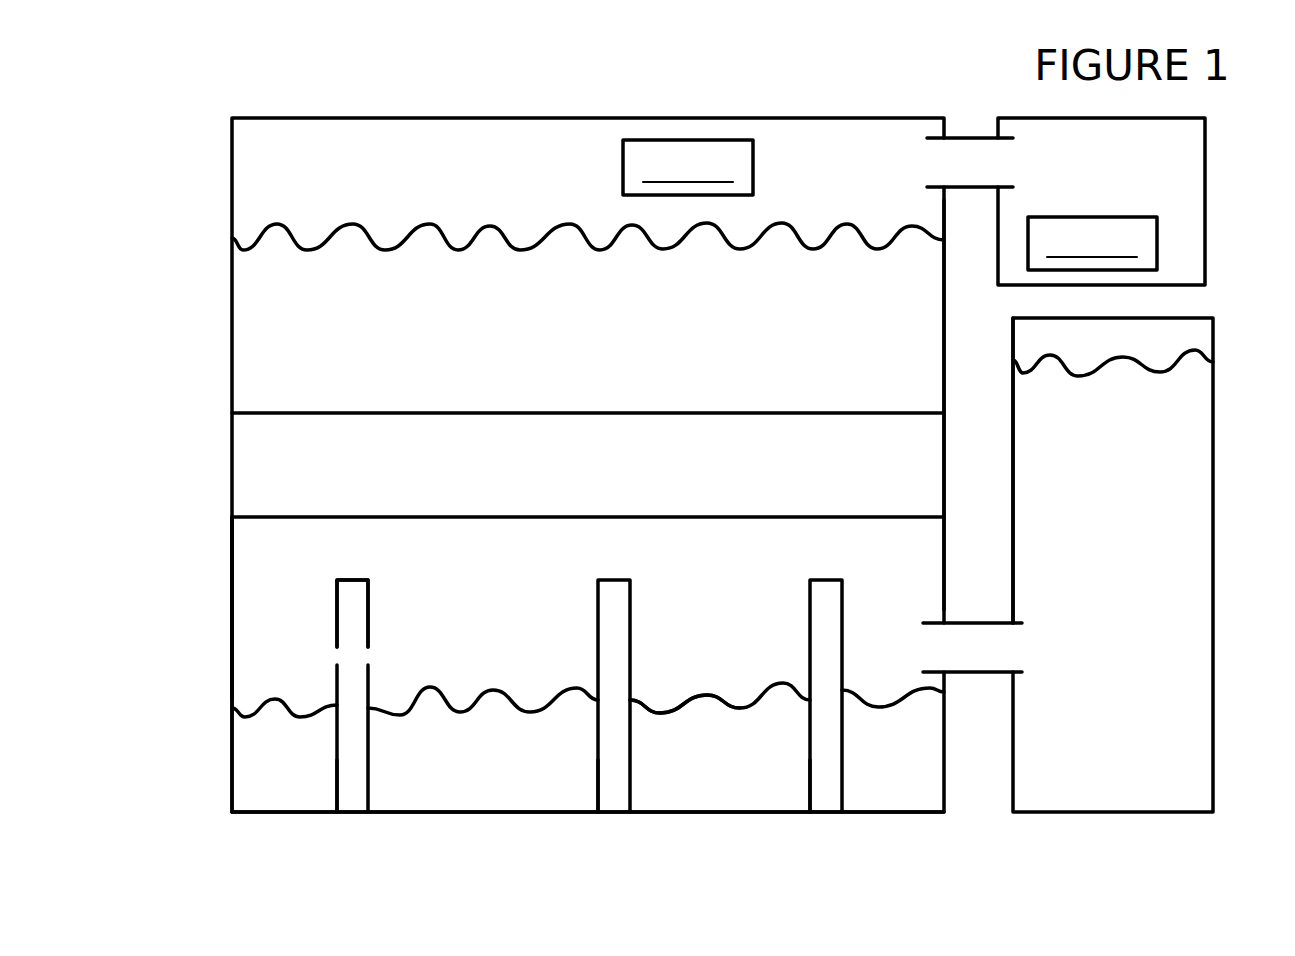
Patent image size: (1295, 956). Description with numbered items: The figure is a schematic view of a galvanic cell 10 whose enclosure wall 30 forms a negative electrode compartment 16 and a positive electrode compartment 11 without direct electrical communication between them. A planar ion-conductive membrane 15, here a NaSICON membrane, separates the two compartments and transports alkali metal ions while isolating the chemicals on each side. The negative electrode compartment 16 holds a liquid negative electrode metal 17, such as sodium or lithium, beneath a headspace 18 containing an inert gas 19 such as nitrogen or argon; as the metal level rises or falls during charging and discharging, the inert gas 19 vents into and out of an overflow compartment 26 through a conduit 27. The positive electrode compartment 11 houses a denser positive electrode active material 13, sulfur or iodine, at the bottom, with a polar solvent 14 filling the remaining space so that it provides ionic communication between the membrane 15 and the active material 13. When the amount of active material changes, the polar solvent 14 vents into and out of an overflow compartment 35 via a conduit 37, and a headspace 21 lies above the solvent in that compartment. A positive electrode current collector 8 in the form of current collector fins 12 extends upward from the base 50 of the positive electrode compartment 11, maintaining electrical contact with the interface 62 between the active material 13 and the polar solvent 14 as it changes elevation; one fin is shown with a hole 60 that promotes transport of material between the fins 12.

The galvanic cell 10 is at (192, 803).
The positive electrode compartment 11 is at (232, 685).
The enclosure wall 30 is at (232, 582).
The ion-conductive membrane 15 is at (232, 463).
The headspace 18 is at (542, 175).
The negative electrode metal 17 is at (575, 340).
The inert gas 19 is at (753, 166).
The conduit 27 is at (978, 136).
The overflow compartment 26 is at (1205, 240).
The negative electrode compartment 16 is at (947, 339).
The conduit 37 is at (987, 620).
The overflow compartment 35 is at (1048, 812).
The headspace 21 is at (1068, 358).
The polar solvent 14 is at (1078, 507).
The positive electrode active material 13 is at (477, 748).
The current collector fins 12 is at (336, 763).
The hole 60 is at (390, 675).
The interface 62 is at (706, 697).
The positive electrode current collector 8 is at (390, 796).
The base 50 is at (662, 812).